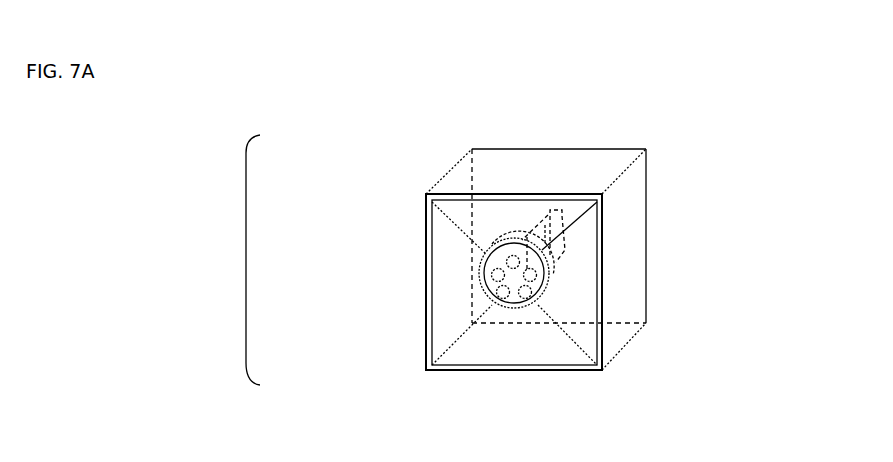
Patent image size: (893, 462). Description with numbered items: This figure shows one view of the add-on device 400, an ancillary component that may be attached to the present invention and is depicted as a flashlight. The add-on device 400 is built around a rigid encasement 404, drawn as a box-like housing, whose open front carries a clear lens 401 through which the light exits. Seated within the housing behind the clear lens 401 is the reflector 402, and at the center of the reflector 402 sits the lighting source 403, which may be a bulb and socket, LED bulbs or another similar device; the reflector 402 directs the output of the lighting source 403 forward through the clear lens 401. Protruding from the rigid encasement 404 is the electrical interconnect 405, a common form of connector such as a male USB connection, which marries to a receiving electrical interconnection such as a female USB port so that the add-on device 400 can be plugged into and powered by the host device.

The add-on device 400 is at (246, 260).
The clear lens 401 is at (432, 336).
The reflector 402 is at (453, 232).
The lighting source 403 is at (515, 302).
The rigid encasement 404 is at (586, 259).
The electrical interconnect 405 is at (557, 223).